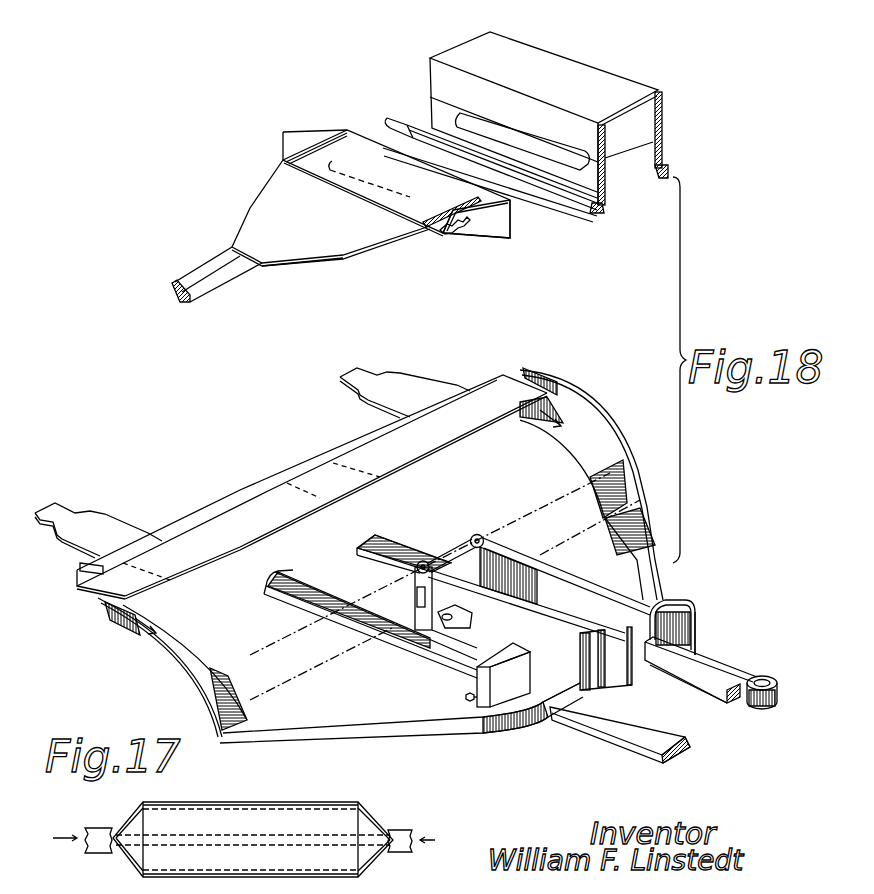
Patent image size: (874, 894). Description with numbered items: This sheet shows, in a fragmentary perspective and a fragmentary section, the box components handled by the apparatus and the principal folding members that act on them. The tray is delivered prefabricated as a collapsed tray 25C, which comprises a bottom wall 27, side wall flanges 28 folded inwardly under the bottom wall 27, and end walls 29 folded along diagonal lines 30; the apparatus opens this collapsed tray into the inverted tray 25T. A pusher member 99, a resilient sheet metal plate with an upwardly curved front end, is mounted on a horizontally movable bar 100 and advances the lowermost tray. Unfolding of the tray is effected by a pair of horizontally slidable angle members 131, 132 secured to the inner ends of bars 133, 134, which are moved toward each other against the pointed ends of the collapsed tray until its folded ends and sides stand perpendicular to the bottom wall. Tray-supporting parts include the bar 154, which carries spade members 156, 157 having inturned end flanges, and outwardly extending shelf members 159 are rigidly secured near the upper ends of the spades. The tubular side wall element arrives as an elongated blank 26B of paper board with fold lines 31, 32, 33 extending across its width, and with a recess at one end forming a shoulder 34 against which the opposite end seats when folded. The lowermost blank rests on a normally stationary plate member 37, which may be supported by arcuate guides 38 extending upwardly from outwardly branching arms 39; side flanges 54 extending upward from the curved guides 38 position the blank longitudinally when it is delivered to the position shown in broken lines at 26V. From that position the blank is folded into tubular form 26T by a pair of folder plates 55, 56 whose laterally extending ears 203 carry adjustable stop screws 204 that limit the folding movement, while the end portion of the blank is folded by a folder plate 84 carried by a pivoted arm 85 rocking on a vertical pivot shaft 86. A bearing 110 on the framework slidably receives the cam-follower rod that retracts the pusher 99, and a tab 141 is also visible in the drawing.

In FIG. 18, the inverted tray 25T is at (463, 50).
In FIG. 18, the bottom wall 27 is at (604, 82).
In FIG. 18, the side wall flanges 28 is at (447, 78).
In FIG. 18, the shelf members 159 is at (463, 115).
In FIG. 18, the spade member 156 is at (660, 146).
In FIG. 18, the spade member 157 is at (587, 188).
In FIG. 18, the bar 154 is at (594, 215).
In FIG. 18, the end walls 29 is at (302, 135).
In FIG. 18, the diagonal lines 30 is at (513, 218).
In FIG. 18, the collapsed tray 25C is at (313, 163).
In FIG. 17, the collapsed tray 25C is at (257, 812).
In FIG. 18, the pusher member 99 is at (323, 248).
In FIG. 18, the bar 100 is at (223, 287).
In FIG. 17, the side wall blank 26B is at (233, 522).
In FIG. 17, the tab 141 is at (112, 530).
In FIG. 17, the plate member 37 is at (82, 573).
In FIG. 17, the fold lines 32 is at (333, 504).
In FIG. 17, the fold line 33 is at (383, 479).
In FIG. 17, the arcuate guides 38 is at (197, 637).
In FIG. 17, the side flanges 54 is at (553, 392).
In FIG. 17, the shoulder 34 is at (587, 393).
In FIG. 17, the fold line 31 is at (177, 588).
In FIG. 17, the arms 39 is at (628, 550).
In FIG. 17, the folder plate 55 is at (627, 570).
In FIG. 17, the tubular side wall 26T is at (643, 594).
In FIG. 17, the folder plate 84 is at (695, 632).
In FIG. 17, the pivoted arm 85 is at (742, 650).
In FIG. 17, the pivot 86 is at (760, 695).
In FIG. 17, the bearing 110 is at (697, 690).
In FIG. 17, the folder plate 56 is at (563, 707).
In FIG. 17, the blank in delivered position 26V is at (317, 687).
In FIG. 17, the ears 203 is at (480, 682).
In FIG. 17, the stop screws 204 is at (468, 700).
In FIG. 17, the angle member 131 is at (103, 828).
In FIG. 17, the angle member 132 is at (400, 828).
In FIG. 17, the bar 133 is at (93, 853).
In FIG. 17, the bar 134 is at (398, 852).